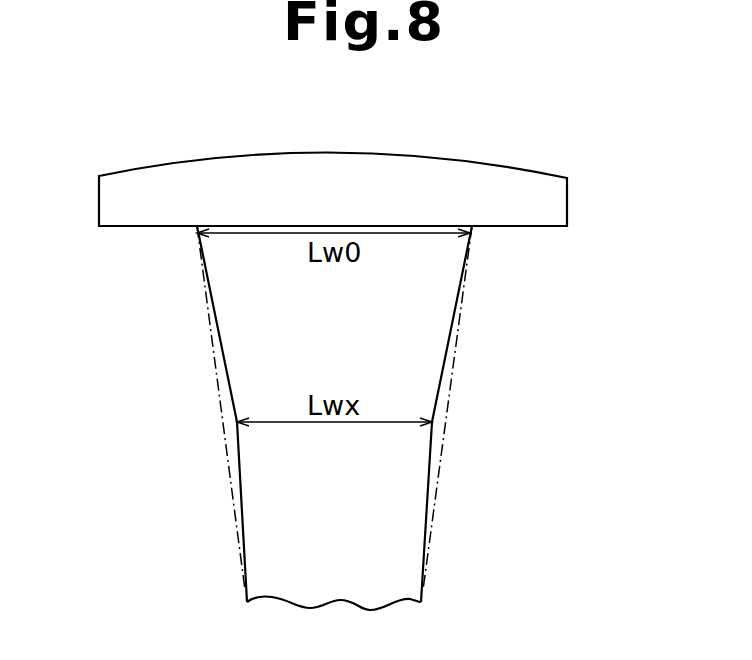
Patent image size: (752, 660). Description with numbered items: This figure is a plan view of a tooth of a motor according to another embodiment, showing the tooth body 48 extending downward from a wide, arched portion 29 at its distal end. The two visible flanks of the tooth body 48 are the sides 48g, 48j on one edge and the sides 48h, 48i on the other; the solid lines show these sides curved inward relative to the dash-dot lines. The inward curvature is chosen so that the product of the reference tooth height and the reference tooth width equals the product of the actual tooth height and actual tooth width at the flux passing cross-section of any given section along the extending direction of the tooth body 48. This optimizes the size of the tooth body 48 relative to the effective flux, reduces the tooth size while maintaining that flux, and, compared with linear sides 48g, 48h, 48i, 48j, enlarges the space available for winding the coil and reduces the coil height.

The tooth tip plate / annular portion 29 is at (450, 162).
The tooth body 48 is at (333, 431).
The side 48g is at (526, 414).
The side 48j is at (447, 345).
The side 48h is at (141, 414).
The side 48i is at (228, 378).